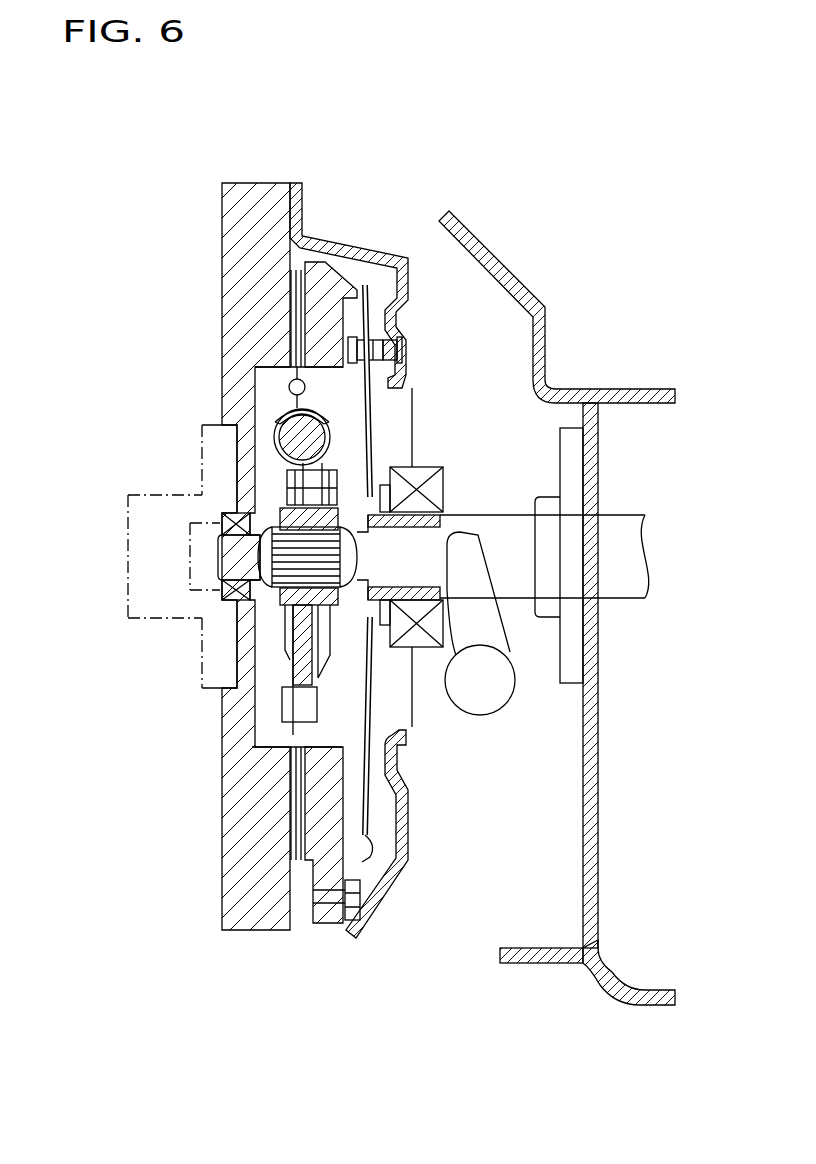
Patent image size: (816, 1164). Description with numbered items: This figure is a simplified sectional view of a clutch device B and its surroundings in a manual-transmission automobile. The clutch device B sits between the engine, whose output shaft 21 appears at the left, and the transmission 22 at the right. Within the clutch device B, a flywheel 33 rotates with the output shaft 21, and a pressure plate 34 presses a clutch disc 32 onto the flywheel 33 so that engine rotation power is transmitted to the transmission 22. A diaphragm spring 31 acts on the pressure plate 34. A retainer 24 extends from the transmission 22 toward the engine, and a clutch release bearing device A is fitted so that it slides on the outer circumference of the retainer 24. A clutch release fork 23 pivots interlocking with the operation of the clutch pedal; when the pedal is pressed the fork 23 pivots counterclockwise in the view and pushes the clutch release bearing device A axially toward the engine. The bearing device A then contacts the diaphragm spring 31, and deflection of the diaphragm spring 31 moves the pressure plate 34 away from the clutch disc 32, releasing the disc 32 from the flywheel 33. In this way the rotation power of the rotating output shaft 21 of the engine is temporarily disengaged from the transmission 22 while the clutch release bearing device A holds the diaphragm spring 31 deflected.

The output shaft 21 is at (155, 585).
The transmission 22 is at (505, 277).
The clutch release fork 23 is at (478, 620).
The retainer 24 is at (490, 532).
The diaphragm spring 31 is at (367, 678).
The clutch disc 32 is at (298, 272).
The flywheel 33 is at (242, 250).
The pressure plate 34 is at (337, 288).
The clutch release bearing device A is at (419, 466).
The clutch device B is at (308, 500).